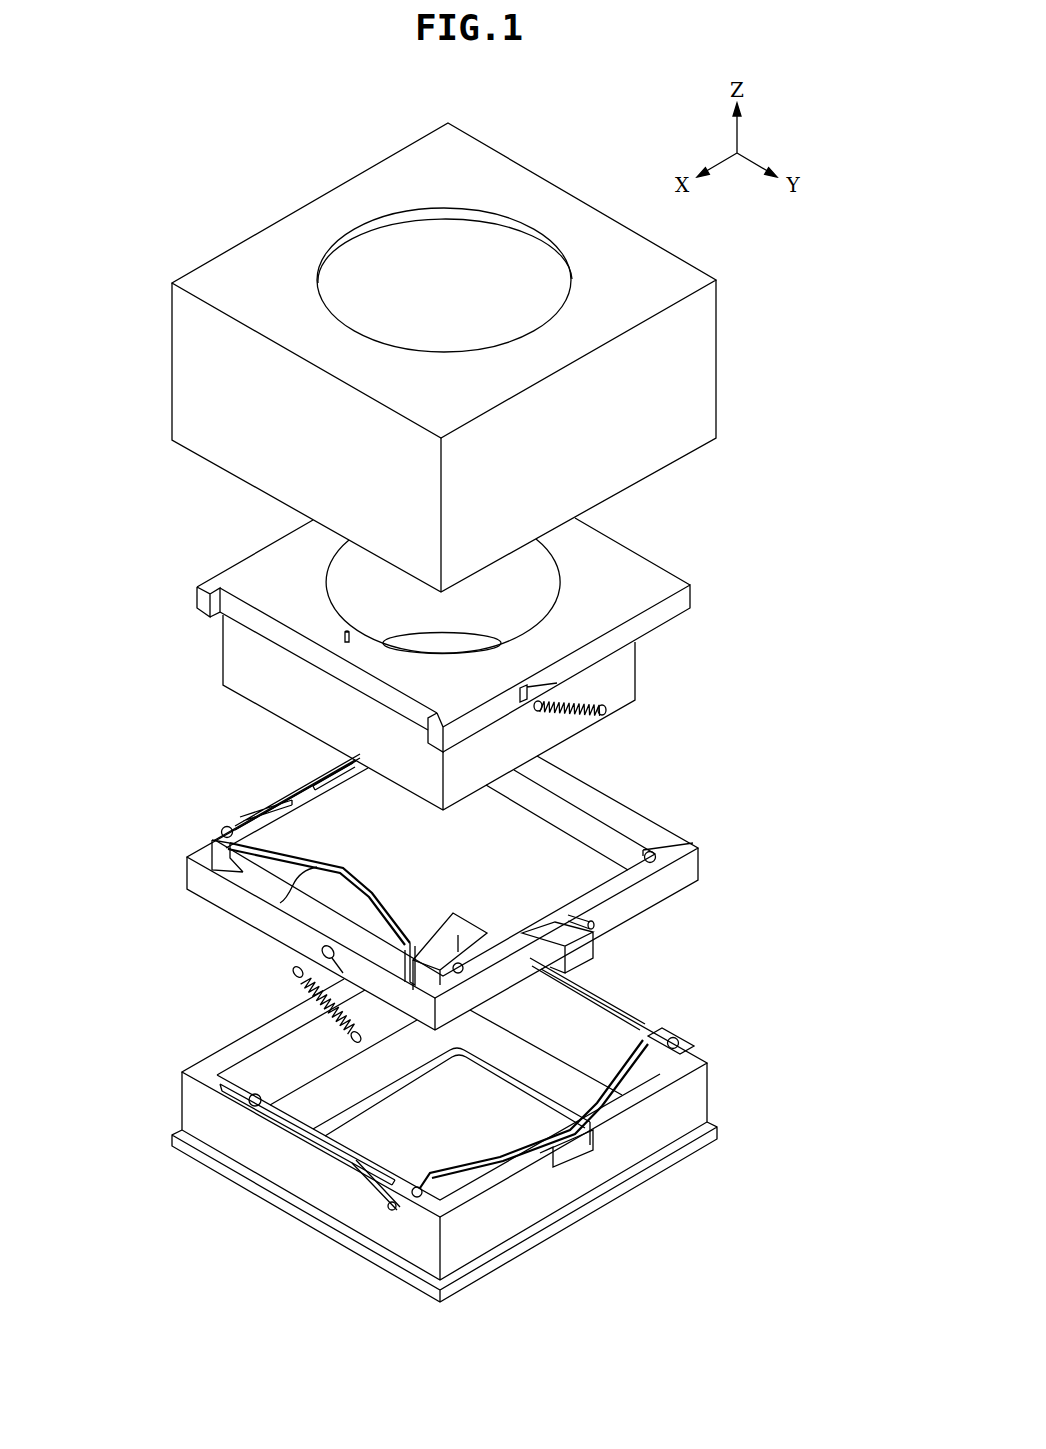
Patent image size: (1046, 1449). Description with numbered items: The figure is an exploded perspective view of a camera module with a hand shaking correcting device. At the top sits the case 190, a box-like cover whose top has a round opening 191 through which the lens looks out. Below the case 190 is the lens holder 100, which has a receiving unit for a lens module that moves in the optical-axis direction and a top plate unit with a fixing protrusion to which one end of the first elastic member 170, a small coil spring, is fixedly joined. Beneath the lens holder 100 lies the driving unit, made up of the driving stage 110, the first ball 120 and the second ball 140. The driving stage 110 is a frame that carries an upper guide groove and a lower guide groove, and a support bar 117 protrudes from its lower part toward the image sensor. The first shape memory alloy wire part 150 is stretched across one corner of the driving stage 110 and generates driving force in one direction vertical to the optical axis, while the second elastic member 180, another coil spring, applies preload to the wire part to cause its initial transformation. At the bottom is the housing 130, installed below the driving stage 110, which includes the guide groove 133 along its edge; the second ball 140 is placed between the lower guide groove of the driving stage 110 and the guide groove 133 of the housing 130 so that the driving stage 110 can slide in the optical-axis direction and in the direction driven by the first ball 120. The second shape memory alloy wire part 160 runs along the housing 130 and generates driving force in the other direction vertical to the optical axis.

The case 190 is at (680, 270).
The opening of cover 191 is at (497, 262).
The lens holder 100 is at (656, 582).
The first elastic member 170 is at (594, 714).
The driving stage 110 is at (626, 812).
The first ball 120 is at (221, 832).
The first shape memory alloy wire part 150 is at (222, 903).
The support bar 117 is at (578, 960).
The second elastic member 180 is at (296, 976).
The guide groove 133 is at (626, 986).
The second ball 140 is at (680, 1046).
The housing 130 is at (698, 1100).
The second shape memory alloy wire part 160 is at (580, 1148).